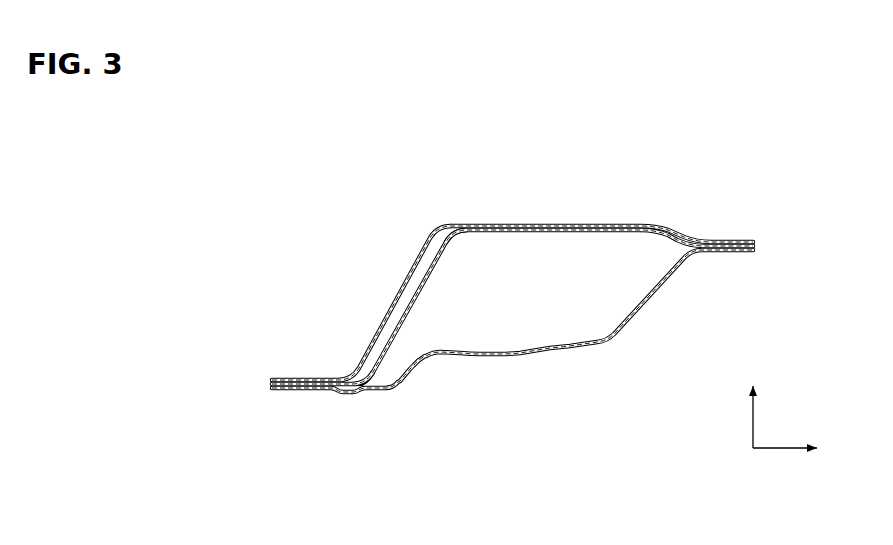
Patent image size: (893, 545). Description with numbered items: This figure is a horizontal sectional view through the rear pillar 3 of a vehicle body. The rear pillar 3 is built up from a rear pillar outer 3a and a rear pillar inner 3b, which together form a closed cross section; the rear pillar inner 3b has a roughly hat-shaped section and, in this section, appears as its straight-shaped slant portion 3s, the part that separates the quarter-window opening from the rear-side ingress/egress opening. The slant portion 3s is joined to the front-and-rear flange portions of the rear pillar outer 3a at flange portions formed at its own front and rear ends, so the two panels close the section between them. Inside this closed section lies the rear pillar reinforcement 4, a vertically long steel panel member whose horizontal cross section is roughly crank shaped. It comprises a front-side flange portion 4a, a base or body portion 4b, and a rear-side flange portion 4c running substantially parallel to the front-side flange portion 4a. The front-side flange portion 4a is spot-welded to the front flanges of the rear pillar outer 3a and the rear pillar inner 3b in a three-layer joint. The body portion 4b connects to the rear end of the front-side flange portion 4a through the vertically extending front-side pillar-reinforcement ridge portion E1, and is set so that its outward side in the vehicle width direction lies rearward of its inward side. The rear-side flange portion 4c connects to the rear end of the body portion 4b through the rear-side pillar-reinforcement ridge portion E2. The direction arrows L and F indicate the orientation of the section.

The rear pillar 3 is at (512, 259).
The rear pillar outer 3a is at (577, 352).
The rear pillar inner 3b is at (361, 303).
The slant portion 3s is at (399, 286).
The rear pillar reinforcement 4 is at (512, 336).
The front-side flange portion 4a is at (633, 233).
The base portion 4b is at (418, 299).
The rear-side flange portion 4c is at (356, 376).
The front-side pillar-reinforcement ridge portion E1 is at (456, 240).
The rear-side pillar-reinforcement ridge portion E2 is at (377, 378).
The vertical (longitudinal) direction L is at (752, 420).
The front direction F is at (782, 450).